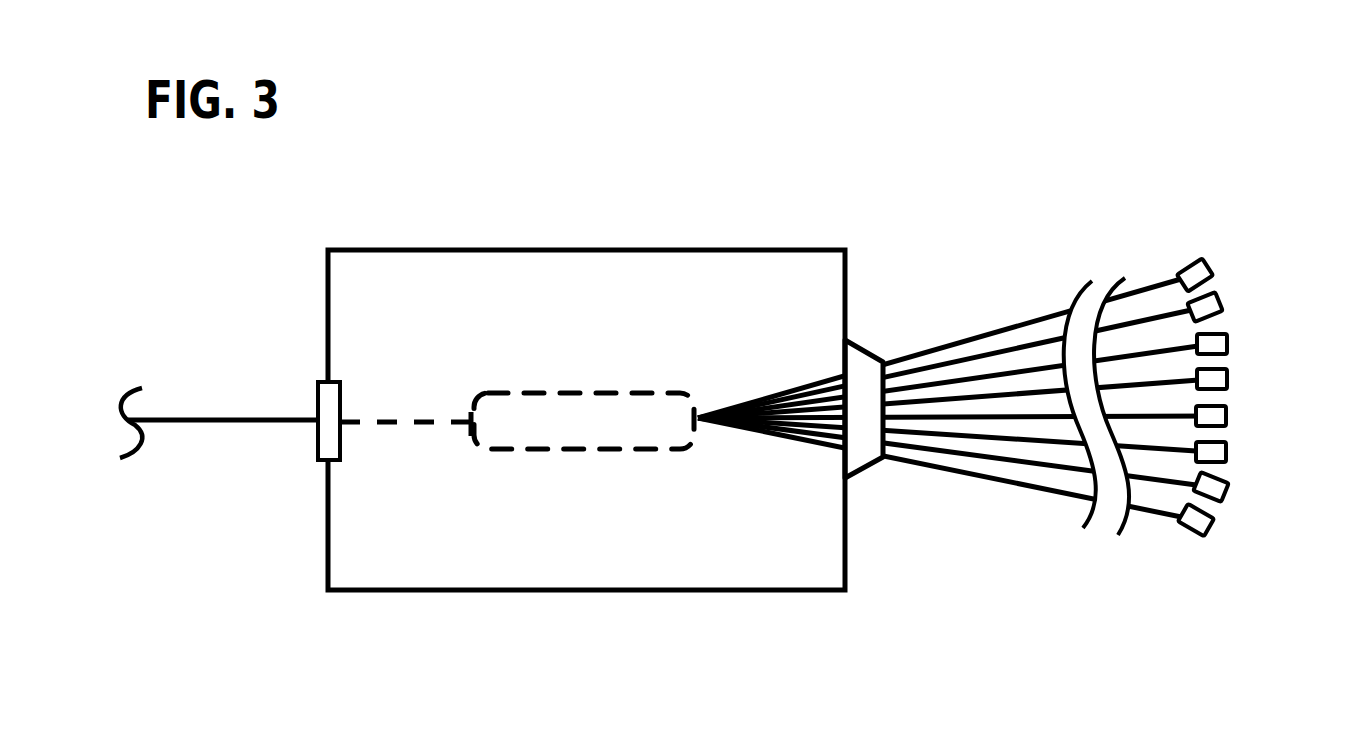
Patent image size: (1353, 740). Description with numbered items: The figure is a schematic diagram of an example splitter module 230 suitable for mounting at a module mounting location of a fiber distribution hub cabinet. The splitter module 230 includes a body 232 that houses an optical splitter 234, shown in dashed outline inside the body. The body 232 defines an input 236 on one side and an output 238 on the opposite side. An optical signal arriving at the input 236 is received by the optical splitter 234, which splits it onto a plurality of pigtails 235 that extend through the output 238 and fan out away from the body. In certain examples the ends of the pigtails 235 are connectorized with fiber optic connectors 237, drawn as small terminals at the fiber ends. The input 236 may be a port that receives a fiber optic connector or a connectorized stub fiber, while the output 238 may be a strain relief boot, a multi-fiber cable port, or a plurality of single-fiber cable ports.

The splitter module 230 is at (728, 155).
The body 232 is at (586, 383).
The optical splitter 234 is at (607, 434).
The pigtails 235 is at (955, 440).
The input 236 is at (273, 394).
The fiber optic connectors 237 is at (1231, 440).
The output 238 is at (924, 332).